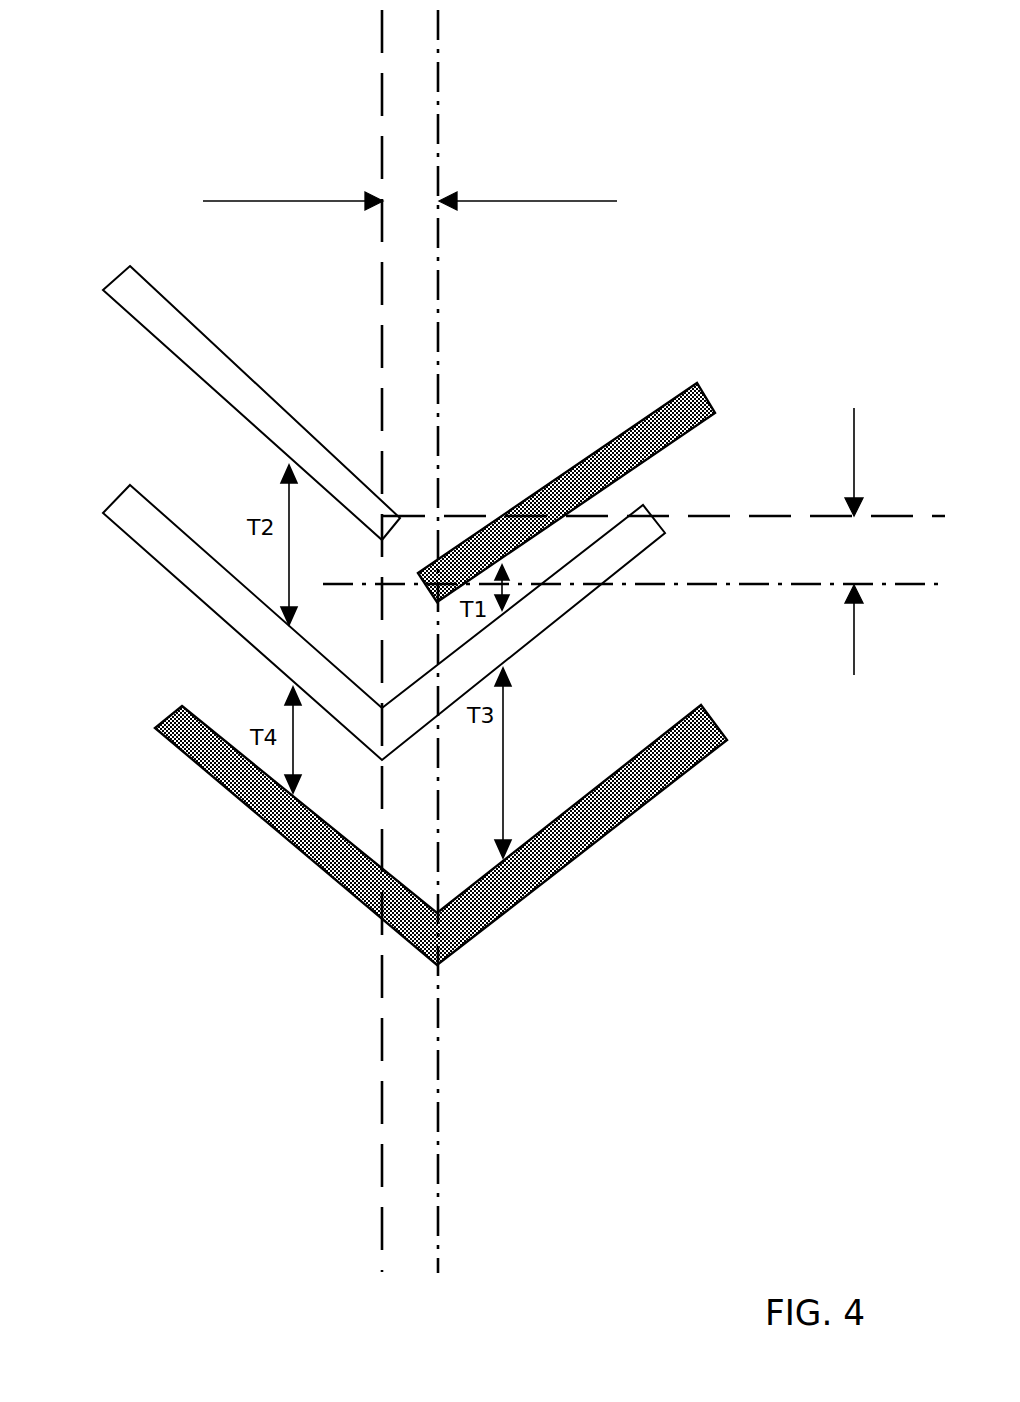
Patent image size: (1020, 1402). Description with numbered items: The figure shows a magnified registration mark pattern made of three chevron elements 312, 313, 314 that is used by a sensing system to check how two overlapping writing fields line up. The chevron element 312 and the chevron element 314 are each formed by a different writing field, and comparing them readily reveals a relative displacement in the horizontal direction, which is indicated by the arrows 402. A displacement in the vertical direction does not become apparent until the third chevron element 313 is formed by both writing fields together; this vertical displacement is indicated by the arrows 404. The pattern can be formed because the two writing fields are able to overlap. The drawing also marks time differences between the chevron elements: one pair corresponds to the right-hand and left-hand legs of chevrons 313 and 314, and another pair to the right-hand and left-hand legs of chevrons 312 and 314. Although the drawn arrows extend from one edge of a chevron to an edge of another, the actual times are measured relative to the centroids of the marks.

The chevron element 312 is at (172, 743).
The third chevron element 313 is at (124, 309).
The chevron element 314 is at (118, 521).
The arrows 402 is at (247, 200).
The arrows 404 is at (854, 418).